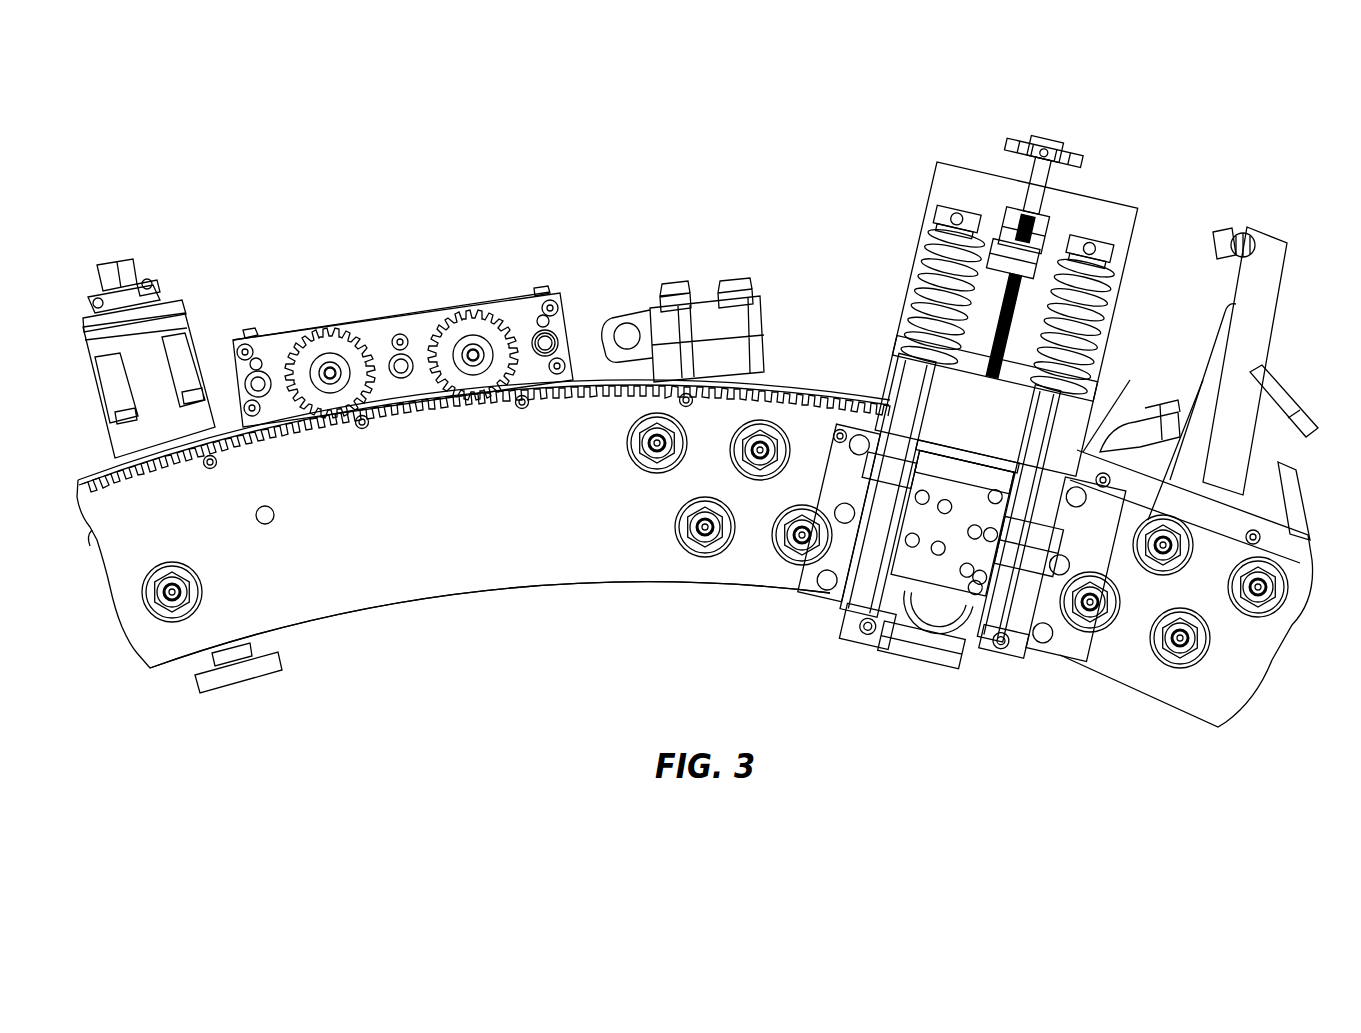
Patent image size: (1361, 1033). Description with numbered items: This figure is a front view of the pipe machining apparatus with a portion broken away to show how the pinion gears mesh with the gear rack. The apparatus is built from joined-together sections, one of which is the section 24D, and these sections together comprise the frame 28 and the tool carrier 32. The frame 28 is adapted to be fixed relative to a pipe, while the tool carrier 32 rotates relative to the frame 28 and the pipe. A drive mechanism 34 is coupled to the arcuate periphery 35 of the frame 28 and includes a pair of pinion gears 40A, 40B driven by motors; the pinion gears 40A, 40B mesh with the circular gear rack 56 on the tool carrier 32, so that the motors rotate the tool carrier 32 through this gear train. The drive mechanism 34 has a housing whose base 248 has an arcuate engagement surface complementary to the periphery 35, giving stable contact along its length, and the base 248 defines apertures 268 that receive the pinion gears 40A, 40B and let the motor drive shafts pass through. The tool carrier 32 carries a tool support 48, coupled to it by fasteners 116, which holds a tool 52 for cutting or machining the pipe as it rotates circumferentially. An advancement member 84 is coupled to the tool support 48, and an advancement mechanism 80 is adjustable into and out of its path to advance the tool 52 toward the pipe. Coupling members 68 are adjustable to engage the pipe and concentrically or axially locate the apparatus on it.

The section 24D is at (488, 600).
The frame 28 is at (108, 465).
The tool carrier 32 is at (315, 585).
The drive mechanism 34 is at (431, 333).
The periphery 35 is at (550, 330).
The pinion gear 40A is at (356, 342).
The pinion gear 40B is at (430, 377).
The tool support 48 is at (1012, 416).
The tool 52 is at (918, 634).
The circular gear rack 56 is at (832, 378).
The coupling member 68 is at (160, 250).
The advancement mechanism 80 is at (1290, 300).
The advancement member 84 is at (1085, 162).
The fastener 116 is at (858, 440).
The base 248 is at (400, 330).
The aperture 268 is at (300, 343).